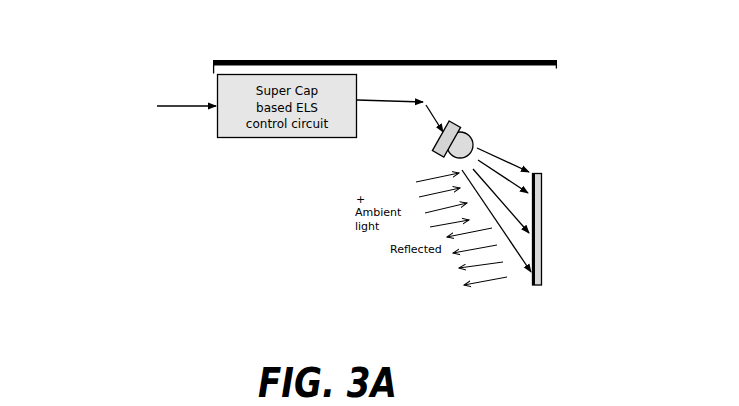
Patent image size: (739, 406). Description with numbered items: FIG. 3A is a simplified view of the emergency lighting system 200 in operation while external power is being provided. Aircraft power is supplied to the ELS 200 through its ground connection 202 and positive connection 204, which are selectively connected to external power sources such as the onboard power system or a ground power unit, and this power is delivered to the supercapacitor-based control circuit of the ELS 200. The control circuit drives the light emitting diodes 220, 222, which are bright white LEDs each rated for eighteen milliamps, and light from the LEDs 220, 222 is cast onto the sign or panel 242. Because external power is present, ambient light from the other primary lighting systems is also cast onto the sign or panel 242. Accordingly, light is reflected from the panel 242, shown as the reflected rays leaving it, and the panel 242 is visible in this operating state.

The emergency lighting system 200 is at (350, 59).
The ground connection 202 is at (128, 67).
The positive connection 204 is at (62, 100).
The light emitting diode 220 is at (526, 174).
The light emitting diode 222 is at (462, 128).
The sign or panel 242 is at (542, 228).